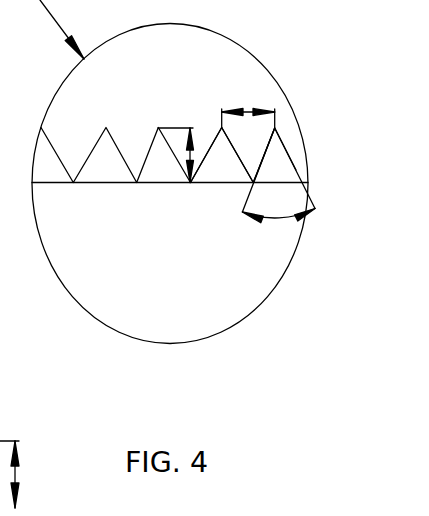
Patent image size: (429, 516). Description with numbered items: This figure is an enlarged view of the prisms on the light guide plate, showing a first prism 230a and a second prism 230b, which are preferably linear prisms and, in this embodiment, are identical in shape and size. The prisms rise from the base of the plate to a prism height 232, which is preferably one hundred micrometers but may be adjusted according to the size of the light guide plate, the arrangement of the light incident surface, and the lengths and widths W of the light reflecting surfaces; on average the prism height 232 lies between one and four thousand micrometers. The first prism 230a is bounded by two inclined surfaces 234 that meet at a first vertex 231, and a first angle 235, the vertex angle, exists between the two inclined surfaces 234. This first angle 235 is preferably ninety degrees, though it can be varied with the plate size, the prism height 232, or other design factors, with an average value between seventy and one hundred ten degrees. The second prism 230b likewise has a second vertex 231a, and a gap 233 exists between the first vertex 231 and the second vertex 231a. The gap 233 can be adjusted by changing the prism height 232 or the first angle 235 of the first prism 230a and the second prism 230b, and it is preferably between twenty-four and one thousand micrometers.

The first prism 230a is at (352, 142).
The second prism 230b is at (222, 170).
The first vertex 231 is at (286, 142).
The second vertex 231a is at (221, 128).
The prism height 232 is at (196, 154).
The gap 233 is at (248, 108).
The inclined surfaces 234 is at (280, 136).
The first angle 235 is at (280, 220).
The width of the light reflecting surfaces W is at (17, 474).